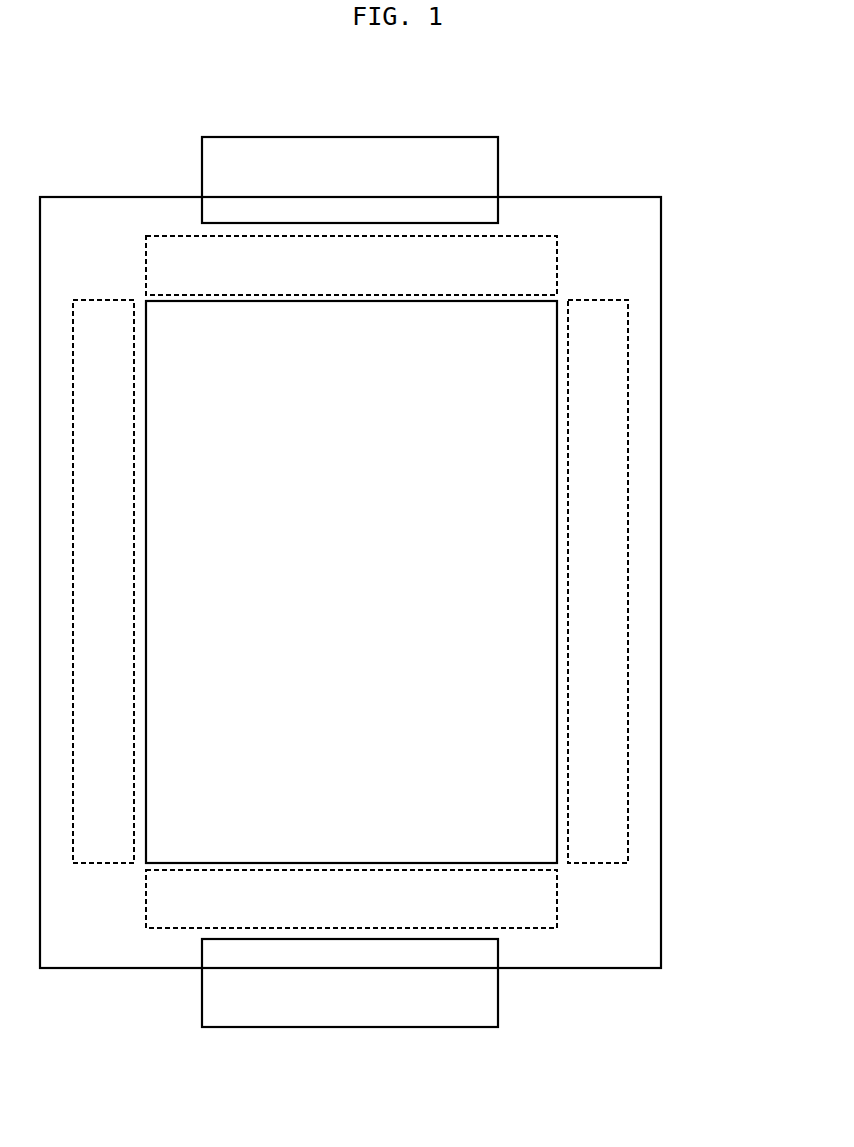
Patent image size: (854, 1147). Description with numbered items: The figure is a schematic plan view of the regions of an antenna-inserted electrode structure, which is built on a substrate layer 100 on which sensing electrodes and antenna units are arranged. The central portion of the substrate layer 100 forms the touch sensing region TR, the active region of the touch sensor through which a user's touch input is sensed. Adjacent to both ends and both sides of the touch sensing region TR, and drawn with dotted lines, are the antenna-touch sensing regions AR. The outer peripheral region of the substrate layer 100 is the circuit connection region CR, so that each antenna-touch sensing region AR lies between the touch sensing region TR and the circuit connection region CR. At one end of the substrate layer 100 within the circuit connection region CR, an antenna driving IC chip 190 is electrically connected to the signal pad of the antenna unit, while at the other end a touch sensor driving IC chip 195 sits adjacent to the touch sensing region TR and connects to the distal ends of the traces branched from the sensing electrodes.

The substrate layer 100 is at (651, 948).
The touch sensor driving IC chip 195 is at (351, 150).
The antenna driving IC chip 190 is at (352, 1012).
The touch sensing region TR is at (510, 650).
The antenna-touch sensing region AR is at (540, 898).
The circuit connection region CR is at (157, 948).